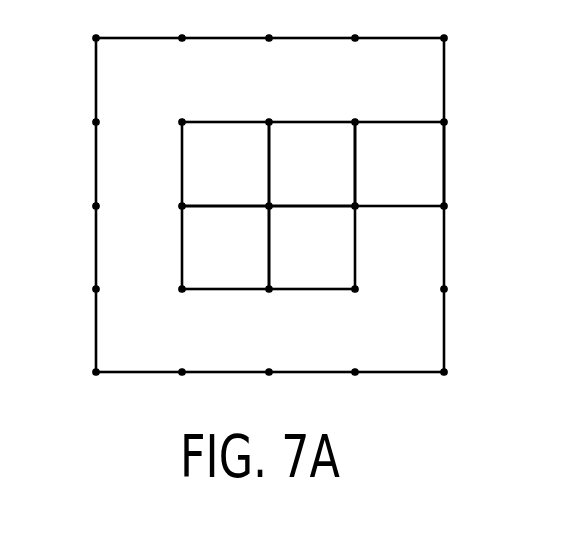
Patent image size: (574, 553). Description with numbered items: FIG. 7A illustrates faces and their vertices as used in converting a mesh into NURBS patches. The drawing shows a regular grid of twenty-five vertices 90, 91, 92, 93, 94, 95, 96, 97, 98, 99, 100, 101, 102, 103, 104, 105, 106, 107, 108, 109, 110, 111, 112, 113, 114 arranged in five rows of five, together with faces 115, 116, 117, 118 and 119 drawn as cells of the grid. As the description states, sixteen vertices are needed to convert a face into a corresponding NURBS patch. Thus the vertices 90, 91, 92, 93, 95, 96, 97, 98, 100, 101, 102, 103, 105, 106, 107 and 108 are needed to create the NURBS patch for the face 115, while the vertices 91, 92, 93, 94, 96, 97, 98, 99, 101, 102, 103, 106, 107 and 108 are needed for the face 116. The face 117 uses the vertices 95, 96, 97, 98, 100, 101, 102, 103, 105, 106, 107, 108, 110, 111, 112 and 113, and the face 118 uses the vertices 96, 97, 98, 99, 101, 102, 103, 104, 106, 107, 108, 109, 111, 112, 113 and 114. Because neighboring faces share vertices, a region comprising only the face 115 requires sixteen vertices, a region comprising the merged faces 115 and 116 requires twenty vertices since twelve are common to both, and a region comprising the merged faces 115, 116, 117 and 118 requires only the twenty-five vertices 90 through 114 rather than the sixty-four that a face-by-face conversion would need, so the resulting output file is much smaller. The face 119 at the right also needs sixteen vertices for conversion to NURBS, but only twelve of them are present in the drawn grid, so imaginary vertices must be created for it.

The vertex 90 is at (84, 24).
The vertex 91 is at (170, 24).
The vertex 92 is at (257, 24).
The vertex 93 is at (343, 24).
The vertex 94 is at (432, 24).
The vertex 95 is at (84, 108).
The vertex 96 is at (170, 108).
The vertex 97 is at (257, 108).
The vertex 98 is at (343, 108).
The vertex 99 is at (432, 108).
The vertex 100 is at (78, 192).
The vertex 101 is at (164, 192).
The vertex 102 is at (251, 192).
The vertex 103 is at (337, 192).
The vertex 104 is at (426, 192).
The vertex 105 is at (78, 275).
The vertex 106 is at (164, 275).
The vertex 107 is at (251, 275).
The vertex 108 is at (337, 275).
The vertex 109 is at (426, 275).
The vertex 110 is at (78, 358).
The vertex 111 is at (164, 358).
The vertex 112 is at (251, 358).
The vertex 113 is at (337, 358).
The vertex 114 is at (426, 358).
The face 115 is at (238, 164).
The face 116 is at (323, 164).
The face 117 is at (238, 247).
The face 118 is at (323, 247).
The face 119 is at (408, 164).